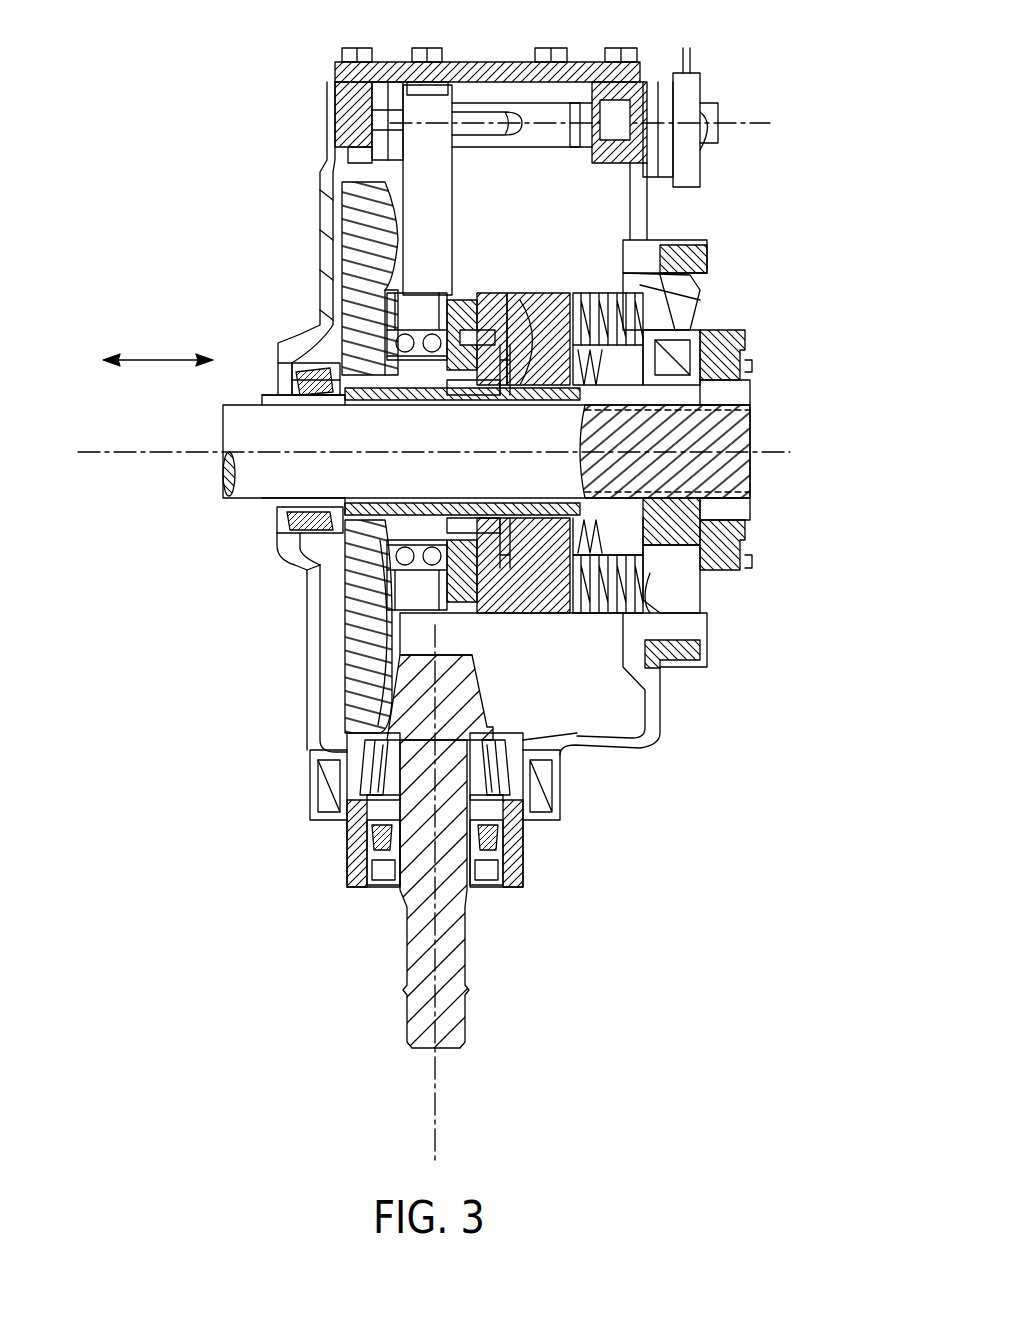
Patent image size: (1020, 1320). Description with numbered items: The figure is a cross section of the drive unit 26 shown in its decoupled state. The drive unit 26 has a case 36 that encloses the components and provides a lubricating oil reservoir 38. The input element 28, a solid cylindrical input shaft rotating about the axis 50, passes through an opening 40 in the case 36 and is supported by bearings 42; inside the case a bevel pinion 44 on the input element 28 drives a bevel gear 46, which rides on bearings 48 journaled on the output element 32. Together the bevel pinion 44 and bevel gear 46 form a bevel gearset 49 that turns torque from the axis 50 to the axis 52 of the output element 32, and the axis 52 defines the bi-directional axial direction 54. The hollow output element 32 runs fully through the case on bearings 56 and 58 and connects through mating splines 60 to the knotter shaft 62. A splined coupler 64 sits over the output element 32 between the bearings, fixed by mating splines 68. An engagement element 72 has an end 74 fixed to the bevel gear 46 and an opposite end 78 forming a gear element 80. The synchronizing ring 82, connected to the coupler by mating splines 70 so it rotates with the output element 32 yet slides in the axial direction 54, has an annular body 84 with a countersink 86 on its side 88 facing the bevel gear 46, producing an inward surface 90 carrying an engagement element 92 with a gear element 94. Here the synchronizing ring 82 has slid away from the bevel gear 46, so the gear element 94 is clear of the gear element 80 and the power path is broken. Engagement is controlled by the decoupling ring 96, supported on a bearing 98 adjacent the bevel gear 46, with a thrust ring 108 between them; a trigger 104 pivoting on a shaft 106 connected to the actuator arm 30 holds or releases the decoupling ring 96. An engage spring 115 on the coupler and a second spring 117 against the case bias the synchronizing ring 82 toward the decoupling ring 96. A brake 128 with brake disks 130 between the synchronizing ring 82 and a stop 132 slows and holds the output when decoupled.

The drive unit 26 is at (778, 280).
The input element 28 is at (457, 963).
The actuator arm 30 is at (690, 60).
The output element 32 is at (295, 378).
The case 36 is at (325, 178).
The lubricating oil reservoir 38 is at (600, 745).
The opening 40 is at (385, 870).
The bearings 42 is at (490, 773).
The bevel pinion 44 is at (490, 715).
The bevel gear 46 is at (340, 713).
The bearings 48 is at (412, 396).
The bevel gearset 49 is at (335, 688).
The axis 50 is at (435, 1145).
The axis 52 is at (160, 452).
The axial direction 54 is at (160, 360).
The bearing 56 is at (290, 536).
The bearing 58 is at (750, 500).
The mating splines 60 is at (750, 410).
The knotter shaft 62 is at (228, 498).
The splined coupler 64 is at (735, 537).
The mating splines 68 is at (518, 320).
The mating splines 70 is at (537, 315).
The engagement element 72 is at (500, 598).
The end 74 is at (455, 328).
The end 78 is at (532, 598).
The gear element 80 is at (482, 330).
The synchronizing ring 82 is at (578, 600).
The annular shaped body 84 is at (546, 300).
The countersink 86 is at (520, 518).
The side 88 is at (466, 598).
The surface 90 is at (514, 398).
The engagement element 92 is at (456, 398).
The gear element 94 is at (505, 518).
The decoupling ring 96 is at (426, 298).
The bearing 98 is at (350, 320).
The trigger 104 is at (447, 200).
The shaft 106 is at (565, 103).
The thrust ring 108 is at (330, 585).
The engage spring 115 is at (700, 372).
The second spring 117 is at (690, 322).
The brake 128 is at (600, 292).
The brake disks 130 is at (650, 622).
The stop 132 is at (640, 592).